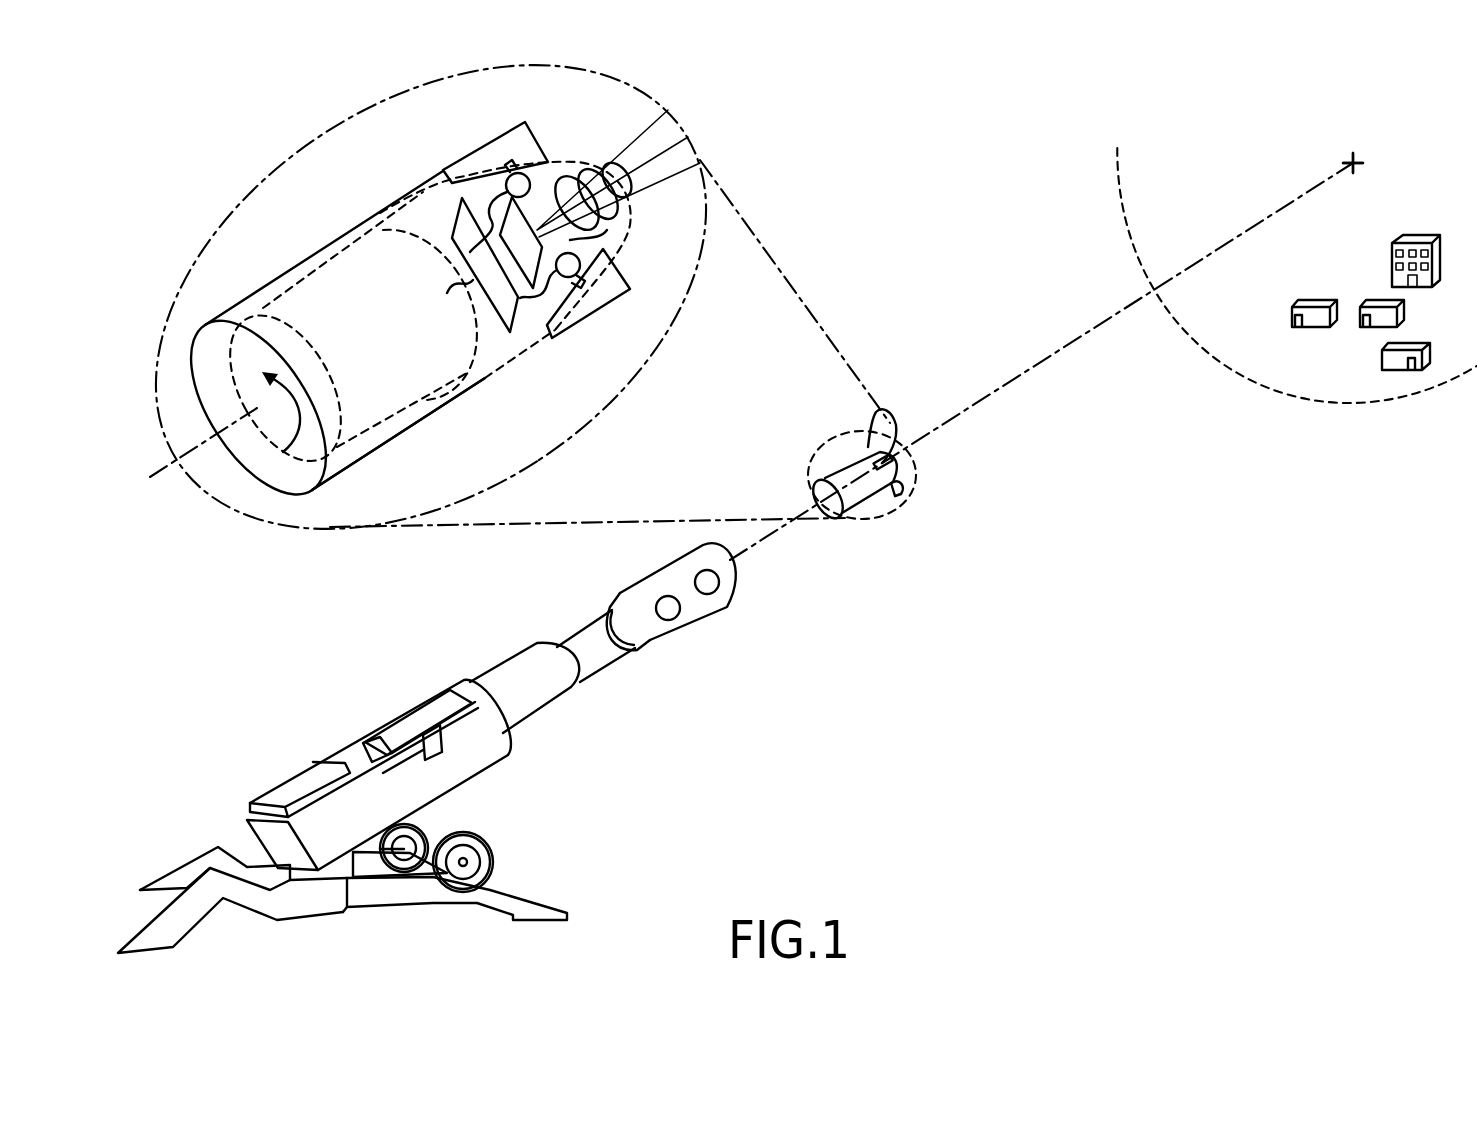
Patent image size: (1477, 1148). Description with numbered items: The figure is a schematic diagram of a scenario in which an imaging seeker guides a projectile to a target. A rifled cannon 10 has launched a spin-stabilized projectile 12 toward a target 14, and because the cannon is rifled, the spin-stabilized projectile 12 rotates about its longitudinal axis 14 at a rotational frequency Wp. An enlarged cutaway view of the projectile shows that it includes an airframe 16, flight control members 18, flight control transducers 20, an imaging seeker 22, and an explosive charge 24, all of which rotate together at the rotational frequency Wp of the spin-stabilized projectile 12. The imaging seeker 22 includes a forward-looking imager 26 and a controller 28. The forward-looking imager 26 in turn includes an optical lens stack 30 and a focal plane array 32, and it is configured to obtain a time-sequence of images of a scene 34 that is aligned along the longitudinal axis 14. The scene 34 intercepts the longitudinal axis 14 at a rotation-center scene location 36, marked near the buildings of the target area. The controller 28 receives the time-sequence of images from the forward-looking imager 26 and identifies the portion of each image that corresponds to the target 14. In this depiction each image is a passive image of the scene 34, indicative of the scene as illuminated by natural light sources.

The rifled cannon 10 is at (408, 660).
The spin-stabilized projectile 12 is at (341, 176).
The target / longitudinal axis 14 is at (165, 462).
The airframe 16 is at (423, 192).
The flight control members 18 is at (497, 137).
The flight control transducers 20 is at (527, 167).
The imaging seeker 22 is at (529, 322).
The explosive charge 24 is at (400, 398).
The forward-looking imager 26 is at (607, 145).
The controller 28 is at (496, 281).
The optical lens stack 30 is at (637, 200).
The focal plane array 32 is at (518, 238).
The scene 34 is at (1190, 335).
The rotation-center scene location 36 is at (1346, 188).